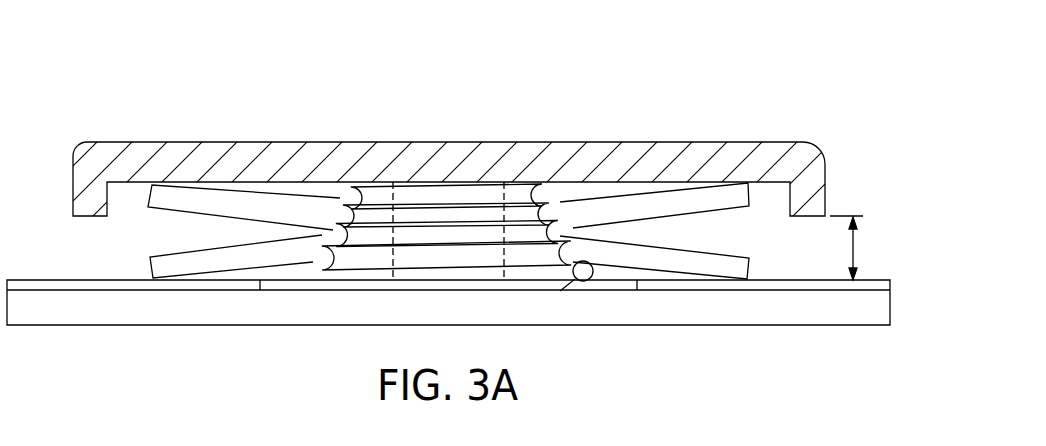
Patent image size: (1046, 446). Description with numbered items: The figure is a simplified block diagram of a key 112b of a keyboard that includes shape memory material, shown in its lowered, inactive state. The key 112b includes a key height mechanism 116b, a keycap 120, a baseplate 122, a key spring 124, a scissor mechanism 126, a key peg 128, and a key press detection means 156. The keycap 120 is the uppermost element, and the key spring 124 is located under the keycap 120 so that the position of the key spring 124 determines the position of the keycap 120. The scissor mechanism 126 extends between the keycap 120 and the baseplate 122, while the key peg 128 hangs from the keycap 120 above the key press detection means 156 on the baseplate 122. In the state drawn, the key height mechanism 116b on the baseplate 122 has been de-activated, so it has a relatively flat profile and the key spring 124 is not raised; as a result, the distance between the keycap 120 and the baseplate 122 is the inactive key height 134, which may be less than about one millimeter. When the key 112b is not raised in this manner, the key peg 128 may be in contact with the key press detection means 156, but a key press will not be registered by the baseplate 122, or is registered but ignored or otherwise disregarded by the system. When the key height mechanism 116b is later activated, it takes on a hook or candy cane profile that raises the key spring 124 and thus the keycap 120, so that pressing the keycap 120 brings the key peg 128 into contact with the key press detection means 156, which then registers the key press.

The key 112b is at (727, 86).
The keycap 120 is at (180, 152).
The baseplate 122 is at (147, 315).
The key spring 124 is at (423, 198).
The scissor mechanism 126 is at (168, 257).
The key peg 128 is at (393, 200).
The key height mechanism 116b is at (305, 285).
The key press detection means 156 is at (533, 285).
The inactive key height 134 is at (853, 252).